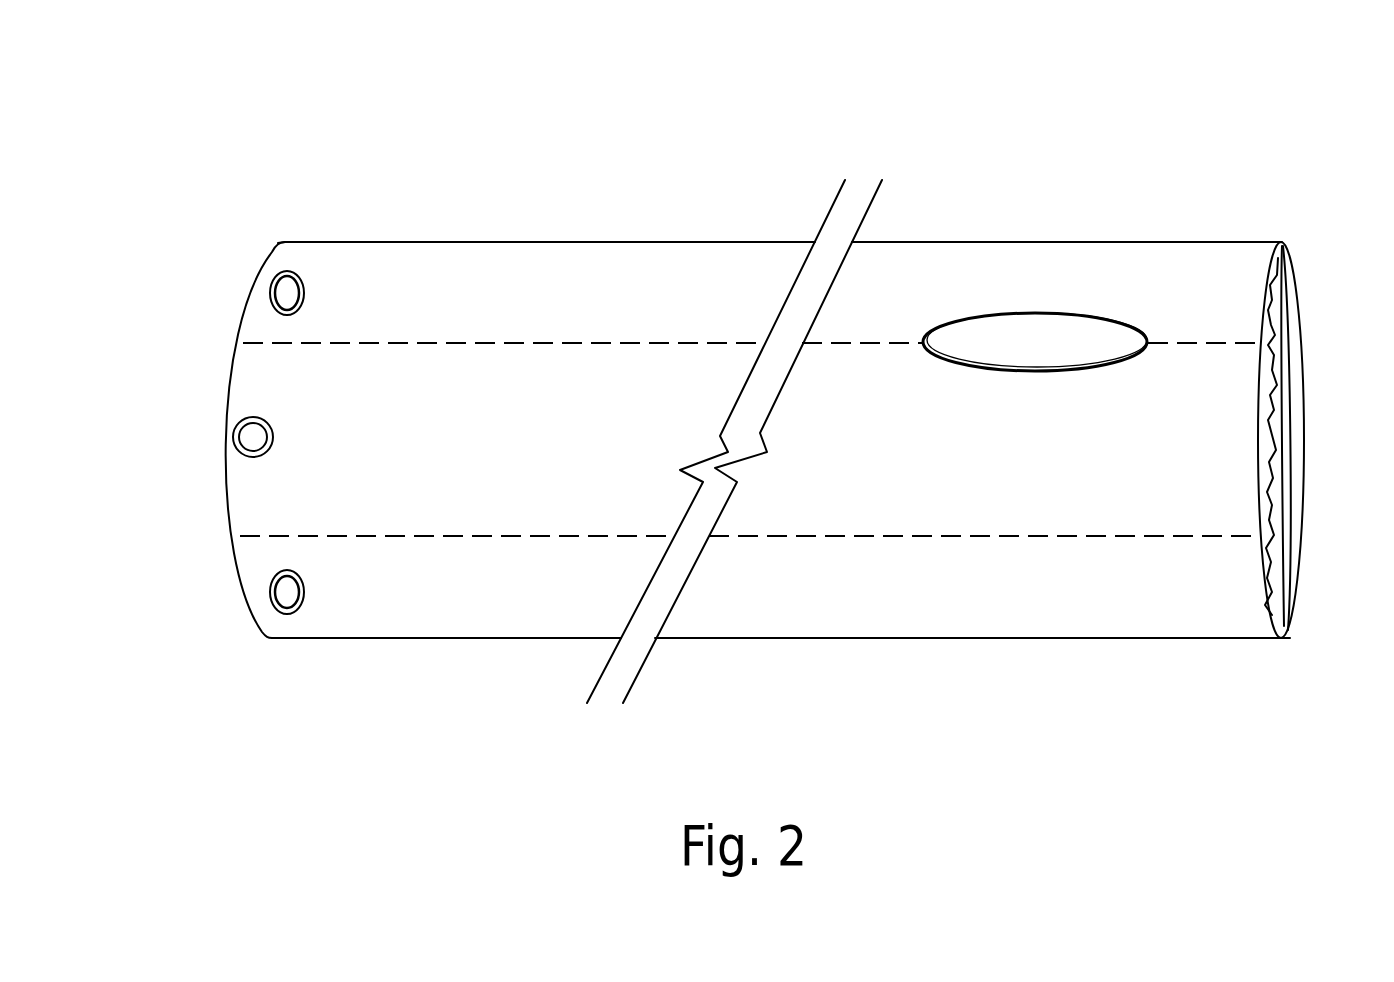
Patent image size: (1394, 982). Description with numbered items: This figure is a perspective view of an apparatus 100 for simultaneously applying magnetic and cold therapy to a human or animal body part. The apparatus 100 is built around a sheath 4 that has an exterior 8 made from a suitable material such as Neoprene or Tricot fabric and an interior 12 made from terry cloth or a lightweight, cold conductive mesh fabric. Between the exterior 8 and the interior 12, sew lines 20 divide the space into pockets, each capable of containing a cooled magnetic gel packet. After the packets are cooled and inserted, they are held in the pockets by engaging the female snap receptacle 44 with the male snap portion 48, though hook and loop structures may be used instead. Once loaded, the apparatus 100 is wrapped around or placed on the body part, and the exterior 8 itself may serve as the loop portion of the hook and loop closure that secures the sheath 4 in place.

The apparatus for simultaneously applying magnetic and cold therapy 100 is at (759, 379).
The sheath 4 is at (759, 427).
The exterior 8 is at (460, 295).
The interior 12 is at (1268, 340).
The sew lines 20 is at (248, 537).
The female snap receptacle 44 is at (272, 294).
The male snap portion 48 is at (285, 298).